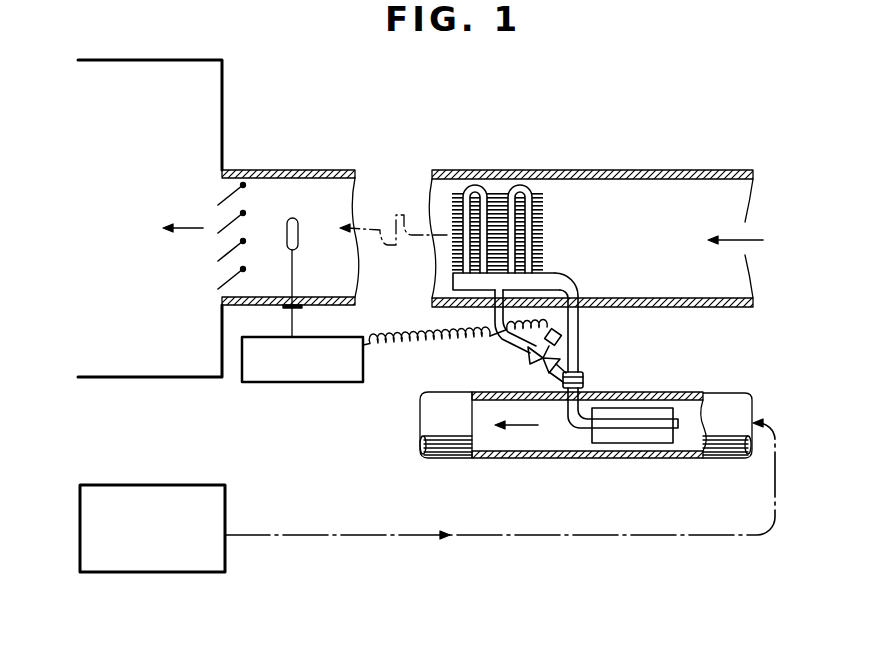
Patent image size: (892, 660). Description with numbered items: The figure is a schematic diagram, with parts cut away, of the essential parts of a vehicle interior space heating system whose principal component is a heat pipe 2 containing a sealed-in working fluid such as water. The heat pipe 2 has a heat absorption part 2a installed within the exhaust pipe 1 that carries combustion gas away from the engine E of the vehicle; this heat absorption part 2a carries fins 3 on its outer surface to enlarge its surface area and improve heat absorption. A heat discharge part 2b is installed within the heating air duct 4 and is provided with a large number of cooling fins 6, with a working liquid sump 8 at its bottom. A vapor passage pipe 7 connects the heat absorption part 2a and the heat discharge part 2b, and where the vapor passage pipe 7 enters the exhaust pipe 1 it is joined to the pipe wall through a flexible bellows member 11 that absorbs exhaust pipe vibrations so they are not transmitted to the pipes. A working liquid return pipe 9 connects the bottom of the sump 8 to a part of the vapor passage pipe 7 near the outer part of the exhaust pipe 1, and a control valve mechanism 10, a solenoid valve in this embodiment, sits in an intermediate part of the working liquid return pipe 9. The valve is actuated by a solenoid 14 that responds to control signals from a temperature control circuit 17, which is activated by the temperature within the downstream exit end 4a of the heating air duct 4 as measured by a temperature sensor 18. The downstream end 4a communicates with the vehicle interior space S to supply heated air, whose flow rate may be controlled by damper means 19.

The vehicle interior space S is at (184, 72).
The engine E is at (149, 485).
The exhaust pipe 1 is at (490, 460).
The heat pipe 2 is at (590, 352).
The heat absorption part 2a is at (582, 441).
The heat discharge part 2b is at (550, 228).
The fins 3 is at (612, 438).
The heating air duct 4 is at (680, 170).
The downstream end of the heating air duct 4a is at (257, 275).
The cooling fins 6 is at (452, 202).
The vapor passage pipe 7 is at (578, 288).
The working liquid sump 8 is at (455, 284).
The working liquid return pipe 9 is at (493, 323).
The control valve mechanism 10 is at (530, 362).
The flexible bellows member 11 is at (585, 378).
The solenoid 14 is at (562, 328).
The temperature control circuit 17 is at (300, 382).
The temperature sensor 18 is at (298, 228).
The damper means 19 is at (226, 222).